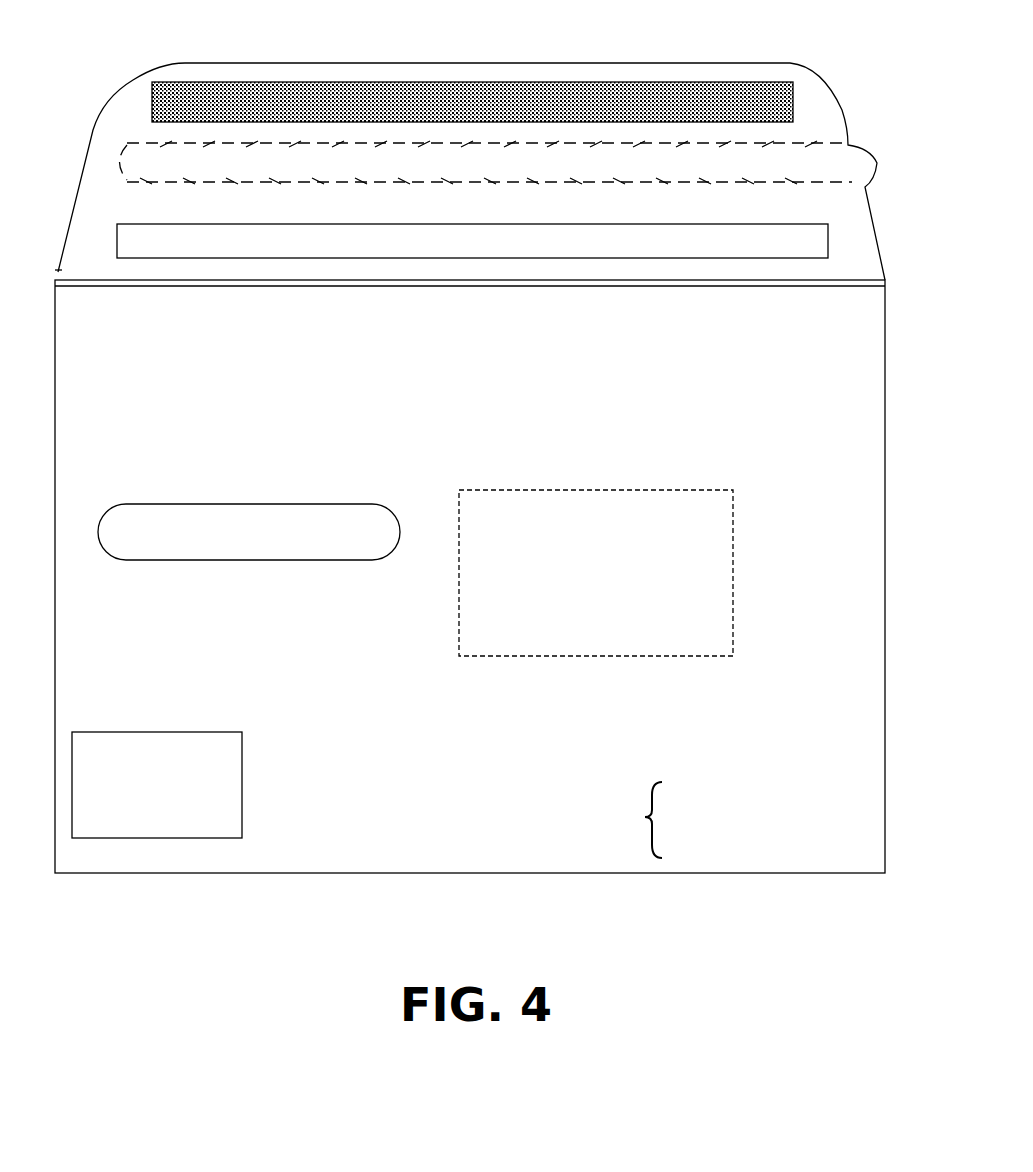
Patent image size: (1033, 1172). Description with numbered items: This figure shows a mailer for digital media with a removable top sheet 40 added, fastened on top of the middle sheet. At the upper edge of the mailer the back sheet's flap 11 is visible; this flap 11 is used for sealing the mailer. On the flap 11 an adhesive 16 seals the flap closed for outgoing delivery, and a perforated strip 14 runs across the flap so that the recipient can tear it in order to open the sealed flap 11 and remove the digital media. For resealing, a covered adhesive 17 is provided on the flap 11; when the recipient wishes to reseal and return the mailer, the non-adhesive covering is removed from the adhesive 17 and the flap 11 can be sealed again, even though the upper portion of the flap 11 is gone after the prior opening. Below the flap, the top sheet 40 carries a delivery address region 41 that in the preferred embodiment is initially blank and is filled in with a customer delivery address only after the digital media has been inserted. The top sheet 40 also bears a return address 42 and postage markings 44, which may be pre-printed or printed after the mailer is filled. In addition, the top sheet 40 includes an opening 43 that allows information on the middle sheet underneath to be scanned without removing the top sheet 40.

The flap 11 is at (128, 108).
The perforated strip 14 is at (790, 162).
The adhesive 16 is at (418, 95).
The covered adhesive 17 is at (197, 224).
The top sheet 40 is at (463, 850).
The delivery address region 41 is at (613, 490).
The return address 42 is at (732, 820).
The opening 43 is at (260, 508).
The postage markings 44 is at (180, 838).